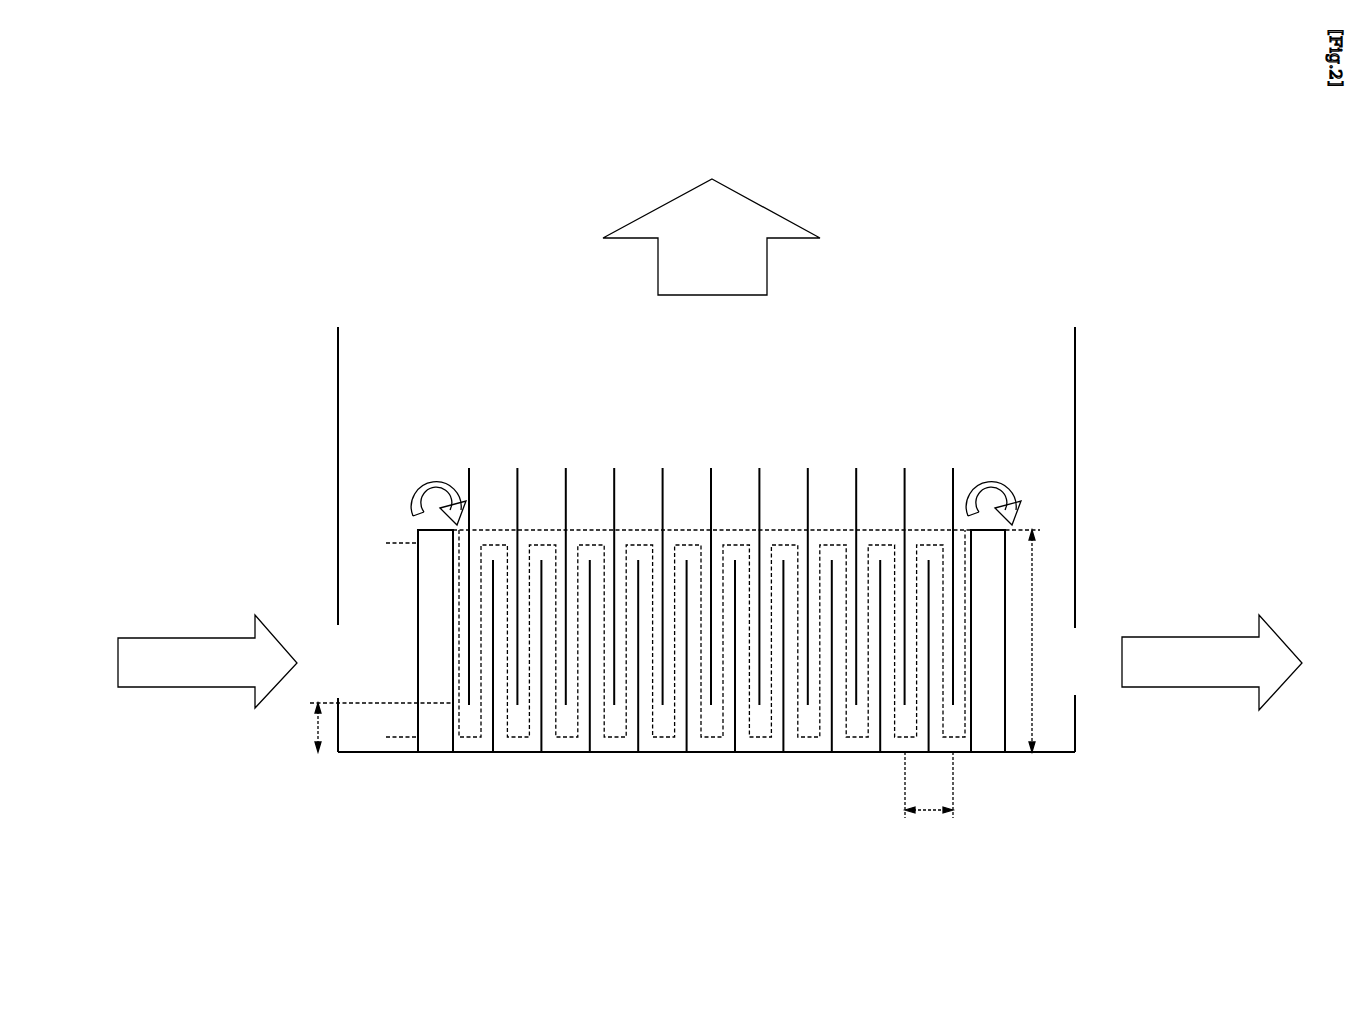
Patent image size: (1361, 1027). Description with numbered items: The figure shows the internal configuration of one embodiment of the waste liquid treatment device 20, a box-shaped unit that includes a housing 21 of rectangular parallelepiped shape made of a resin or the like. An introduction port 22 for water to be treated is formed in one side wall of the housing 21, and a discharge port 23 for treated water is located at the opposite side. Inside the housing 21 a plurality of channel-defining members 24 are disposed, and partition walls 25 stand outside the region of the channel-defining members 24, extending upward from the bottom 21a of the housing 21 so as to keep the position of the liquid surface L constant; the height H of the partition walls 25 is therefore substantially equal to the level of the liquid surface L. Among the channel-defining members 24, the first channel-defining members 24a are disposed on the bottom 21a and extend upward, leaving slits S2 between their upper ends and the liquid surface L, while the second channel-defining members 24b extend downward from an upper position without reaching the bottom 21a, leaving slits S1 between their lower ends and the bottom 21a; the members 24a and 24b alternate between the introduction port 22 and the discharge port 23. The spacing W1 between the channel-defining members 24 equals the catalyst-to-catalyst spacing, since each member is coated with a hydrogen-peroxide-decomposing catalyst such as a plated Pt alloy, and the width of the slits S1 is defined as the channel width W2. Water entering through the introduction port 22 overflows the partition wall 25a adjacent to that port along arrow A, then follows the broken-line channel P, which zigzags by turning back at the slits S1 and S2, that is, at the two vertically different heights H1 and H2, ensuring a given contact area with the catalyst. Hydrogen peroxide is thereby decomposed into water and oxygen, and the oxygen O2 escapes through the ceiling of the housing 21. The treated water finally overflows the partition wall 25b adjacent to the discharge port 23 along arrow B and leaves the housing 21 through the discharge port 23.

The waste liquid treatment device 20 is at (933, 180).
The housing 21 is at (1077, 415).
The bottom 21a is at (765, 752).
The introduction port 22 is at (340, 652).
The discharge port 23 is at (1078, 652).
The channel-defining members 24 is at (711, 567).
The first channel-defining members 24a is at (735, 577).
The second channel-defining members 24b is at (762, 478).
The partition walls 25 is at (719, 610).
The partition wall 25a is at (417, 630).
The partition wall 25b is at (1005, 600).
The channel P is at (837, 548).
The liquid surface L is at (642, 528).
The slits S1 is at (517, 723).
The slits S2 is at (600, 555).
The height of the partition walls H is at (1037, 641).
The height H1 is at (389, 737).
The height H2 is at (389, 545).
The spacing between the channel-defining members W1 is at (929, 796).
The channel width W2 is at (369, 727).
The arrow A is at (438, 491).
The arrow B is at (993, 491).
The oxygen O2 is at (711, 224).